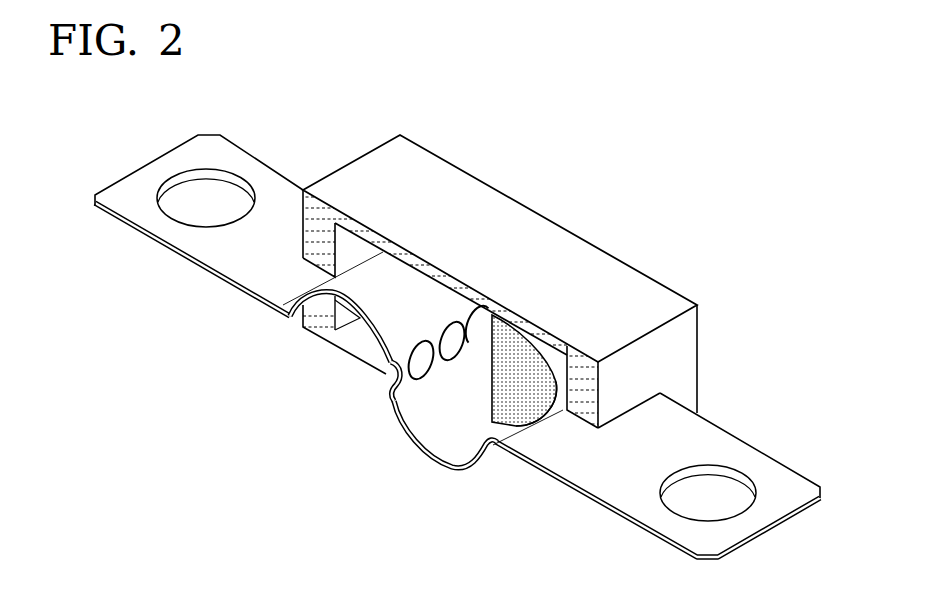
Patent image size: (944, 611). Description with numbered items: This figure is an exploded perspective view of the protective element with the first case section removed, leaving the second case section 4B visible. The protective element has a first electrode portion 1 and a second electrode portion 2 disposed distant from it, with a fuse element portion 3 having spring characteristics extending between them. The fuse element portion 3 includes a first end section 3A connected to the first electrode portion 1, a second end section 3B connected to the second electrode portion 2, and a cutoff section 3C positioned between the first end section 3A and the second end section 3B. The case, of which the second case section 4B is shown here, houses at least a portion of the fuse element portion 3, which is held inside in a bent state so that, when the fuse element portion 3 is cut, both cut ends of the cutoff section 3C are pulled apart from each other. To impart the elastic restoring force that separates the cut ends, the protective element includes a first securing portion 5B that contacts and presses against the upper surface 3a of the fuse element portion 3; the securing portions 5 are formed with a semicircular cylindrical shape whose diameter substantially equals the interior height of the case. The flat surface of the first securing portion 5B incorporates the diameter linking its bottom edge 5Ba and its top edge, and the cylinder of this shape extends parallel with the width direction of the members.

The first electrode portion 1 is at (178, 162).
The second electrode portion 2 is at (778, 489).
The fuse element portion 3 is at (370, 382).
The first end section 3A is at (340, 312).
The second end section 3B is at (413, 428).
The cutoff section 3C is at (362, 385).
The upper surface of the fuse element portion 3a is at (445, 403).
The second case section 4B is at (500, 228).
The low-melting-point metal body 5 is at (473, 431).
The first securing portion 5B is at (515, 388).
The bottom edge 5Ba is at (557, 408).